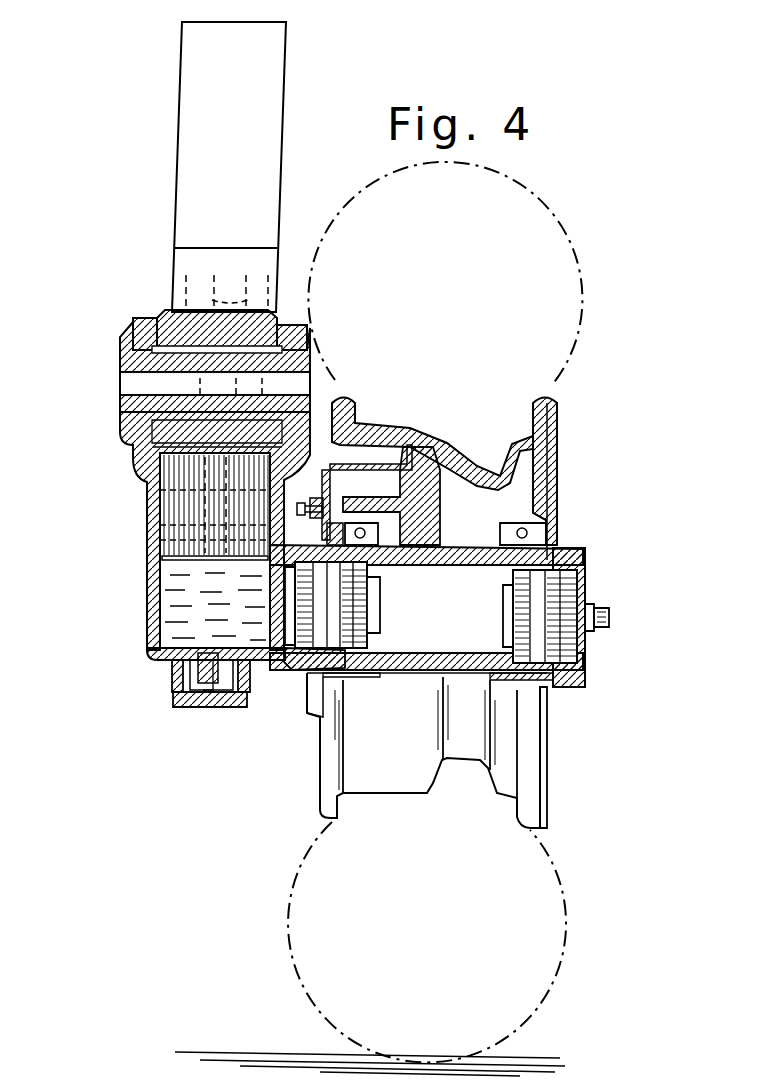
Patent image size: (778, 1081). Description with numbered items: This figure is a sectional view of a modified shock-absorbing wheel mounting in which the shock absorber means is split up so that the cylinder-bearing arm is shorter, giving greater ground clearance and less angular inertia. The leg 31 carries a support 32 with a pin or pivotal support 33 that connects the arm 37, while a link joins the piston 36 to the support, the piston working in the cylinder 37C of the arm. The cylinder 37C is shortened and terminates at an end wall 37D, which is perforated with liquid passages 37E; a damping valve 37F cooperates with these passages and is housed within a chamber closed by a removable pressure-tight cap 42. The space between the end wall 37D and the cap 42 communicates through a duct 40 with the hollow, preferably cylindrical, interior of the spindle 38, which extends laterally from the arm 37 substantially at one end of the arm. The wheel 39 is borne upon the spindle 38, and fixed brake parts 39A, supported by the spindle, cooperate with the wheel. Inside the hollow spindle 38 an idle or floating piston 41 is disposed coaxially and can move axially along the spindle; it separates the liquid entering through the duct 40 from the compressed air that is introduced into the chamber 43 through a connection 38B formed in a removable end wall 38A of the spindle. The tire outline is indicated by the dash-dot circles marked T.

The leg 31 is at (277, 170).
The support 32 is at (252, 285).
The pin or pivotal support 33 is at (125, 372).
The piston 36 is at (195, 477).
The arm 37 is at (147, 535).
The cylinder 37C is at (163, 598).
The end wall 37D is at (160, 656).
The liquid passages 37E is at (228, 650).
The damping valve 37F is at (177, 677).
The spindle 38 is at (468, 565).
The removable end wall 38A is at (556, 610).
The connection 38B is at (608, 628).
The wheel 39 is at (480, 445).
The fixed brake parts 39A is at (396, 470).
The duct 40 is at (256, 666).
The floating piston 41 is at (360, 606).
The pressure-tight cap 42 is at (210, 707).
The chamber 43 is at (422, 645).
The tire T is at (565, 228).